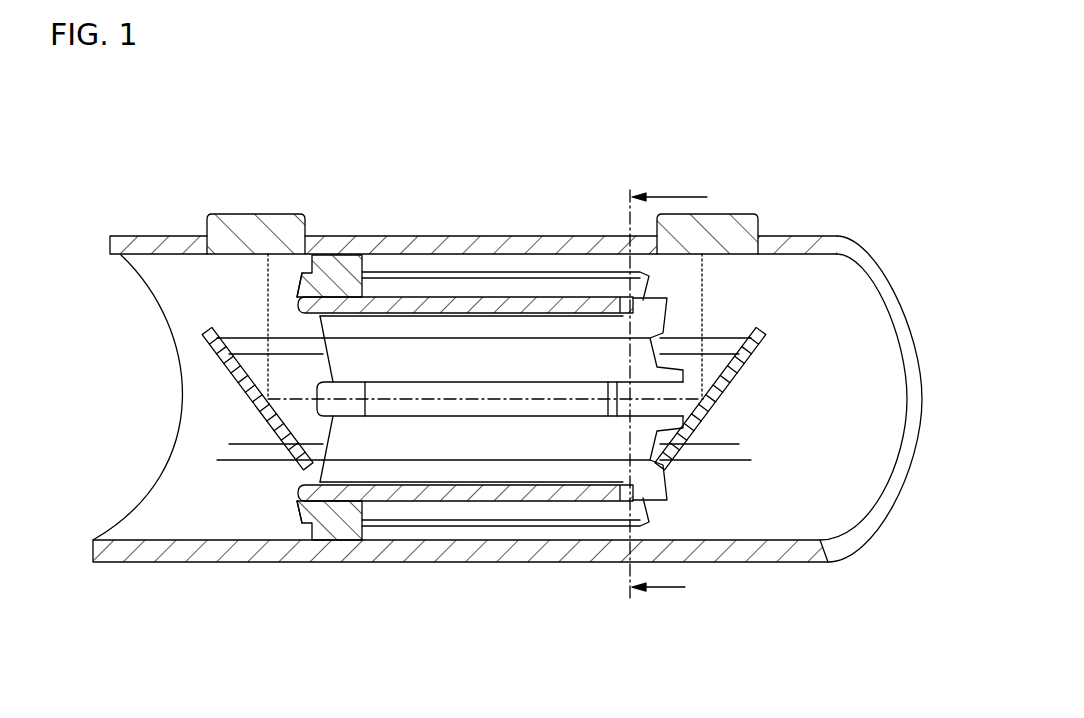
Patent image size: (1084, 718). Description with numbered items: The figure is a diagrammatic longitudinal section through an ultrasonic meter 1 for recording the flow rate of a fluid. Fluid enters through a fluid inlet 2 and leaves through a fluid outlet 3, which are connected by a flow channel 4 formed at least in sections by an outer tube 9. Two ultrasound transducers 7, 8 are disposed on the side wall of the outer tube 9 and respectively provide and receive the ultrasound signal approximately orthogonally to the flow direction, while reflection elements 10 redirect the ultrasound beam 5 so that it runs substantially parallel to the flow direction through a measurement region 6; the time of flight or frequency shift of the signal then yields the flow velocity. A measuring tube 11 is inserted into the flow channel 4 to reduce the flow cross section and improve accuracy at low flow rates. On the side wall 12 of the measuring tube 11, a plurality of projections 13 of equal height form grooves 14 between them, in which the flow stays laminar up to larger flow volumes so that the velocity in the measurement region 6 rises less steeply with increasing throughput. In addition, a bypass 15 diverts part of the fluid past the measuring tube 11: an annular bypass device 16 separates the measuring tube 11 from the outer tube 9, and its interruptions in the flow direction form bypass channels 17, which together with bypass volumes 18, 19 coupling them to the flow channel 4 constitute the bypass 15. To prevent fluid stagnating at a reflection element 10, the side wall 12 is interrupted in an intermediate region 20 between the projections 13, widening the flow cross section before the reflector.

The ultrasonic meter 1 is at (505, 162).
The fluid inlet 2 is at (148, 441).
The fluid outlet 3 is at (910, 283).
The flow channel 4 is at (425, 405).
The ultrasound beam 5 is at (490, 382).
The measurement region 6 is at (312, 398).
The ultrasound transducer 7 is at (708, 232).
The ultrasound transducer 8 is at (262, 232).
The outer tube 9 is at (138, 243).
The reflection element 10 is at (257, 413).
The measuring tube 11 is at (425, 283).
The side wall 12 is at (520, 303).
The projection 13 is at (553, 347).
The groove 14 is at (543, 407).
The bypass 15 is at (533, 532).
The bypass device 16 is at (337, 254).
The bypass channel 17 is at (330, 527).
The bypass volume 18 is at (308, 530).
The bypass volume 19 is at (422, 533).
The intermediate region 20 is at (635, 405).